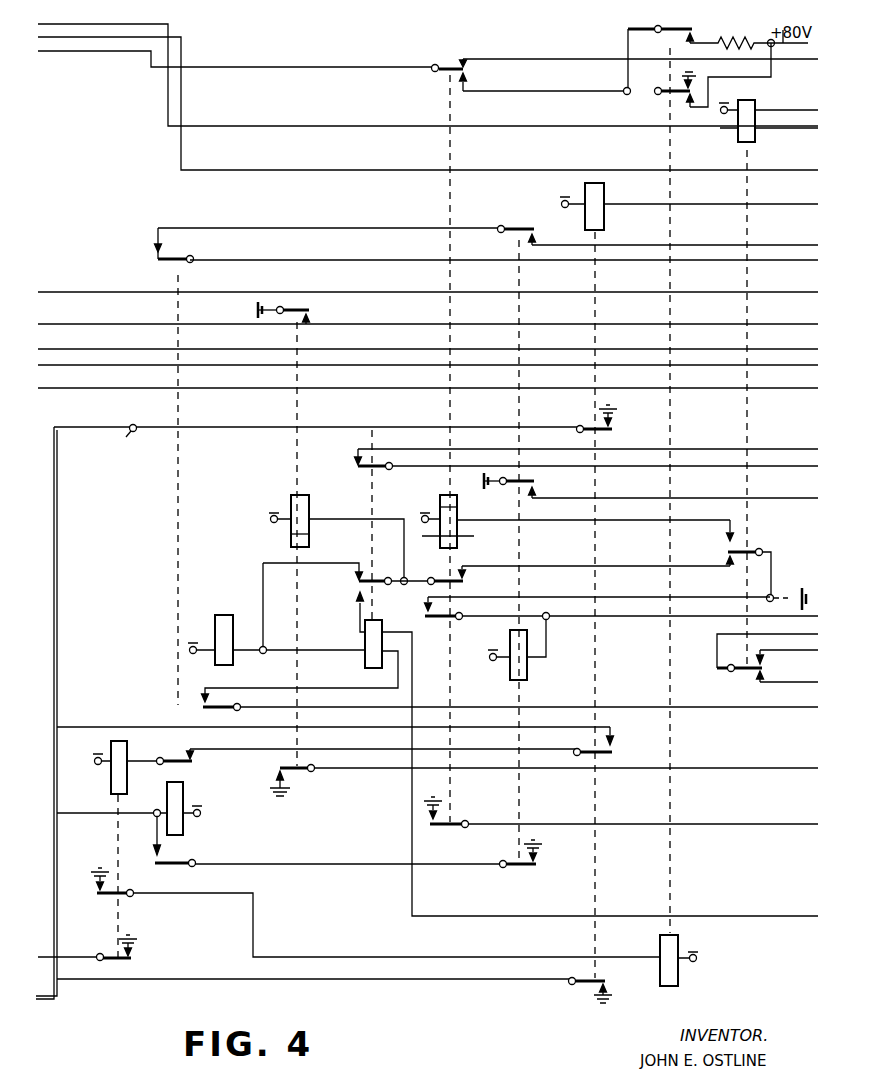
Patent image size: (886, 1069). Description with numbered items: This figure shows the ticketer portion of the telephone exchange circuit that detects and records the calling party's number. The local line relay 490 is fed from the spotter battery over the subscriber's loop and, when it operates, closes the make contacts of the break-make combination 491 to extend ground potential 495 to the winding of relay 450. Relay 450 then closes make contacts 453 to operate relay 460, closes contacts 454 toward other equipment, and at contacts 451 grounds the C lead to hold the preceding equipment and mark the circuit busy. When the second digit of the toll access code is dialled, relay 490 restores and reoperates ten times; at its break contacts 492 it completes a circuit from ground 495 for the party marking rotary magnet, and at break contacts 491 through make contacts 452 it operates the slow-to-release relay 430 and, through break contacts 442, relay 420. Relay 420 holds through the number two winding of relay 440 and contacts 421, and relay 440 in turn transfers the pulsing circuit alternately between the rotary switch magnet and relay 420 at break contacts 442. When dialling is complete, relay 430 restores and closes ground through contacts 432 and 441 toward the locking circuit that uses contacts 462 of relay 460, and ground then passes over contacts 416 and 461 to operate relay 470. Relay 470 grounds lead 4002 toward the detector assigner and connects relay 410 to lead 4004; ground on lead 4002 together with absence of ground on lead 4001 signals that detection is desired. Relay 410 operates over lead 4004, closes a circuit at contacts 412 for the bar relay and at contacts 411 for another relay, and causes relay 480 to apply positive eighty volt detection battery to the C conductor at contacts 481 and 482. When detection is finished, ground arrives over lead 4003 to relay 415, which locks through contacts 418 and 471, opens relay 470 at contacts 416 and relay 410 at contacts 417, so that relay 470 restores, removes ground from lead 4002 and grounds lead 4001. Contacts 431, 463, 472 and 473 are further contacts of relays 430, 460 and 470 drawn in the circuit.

The relay 410 is at (110, 780).
The contacts 411 is at (110, 889).
The contacts 412 is at (134, 954).
The relay 415 is at (185, 790).
The contacts 416 is at (150, 257).
The contacts 417 is at (196, 761).
The contacts 418 is at (168, 857).
The relay 420 is at (232, 612).
The contacts 421 is at (198, 699).
The relay 430 is at (290, 498).
The contacts 431 is at (318, 306).
The contacts 432 is at (288, 777).
The relay 440 is at (362, 657).
The contacts 441 is at (352, 460).
The break contacts 442 is at (353, 580).
The relay 450 is at (438, 498).
The contacts 451 is at (468, 74).
The make contacts 452 is at (466, 580).
The make contacts 453 is at (424, 610).
The contacts 454 is at (440, 816).
The relay 460 is at (508, 670).
The contacts 461 is at (518, 236).
The contacts 462 is at (537, 485).
The contacts 463 is at (538, 857).
The relay 470 is at (604, 191).
The contacts 471 is at (614, 428).
The contacts 472 is at (619, 745).
The contacts 473 is at (588, 988).
The relay 480 is at (680, 940).
The contacts 481 is at (678, 38).
The contacts 482 is at (678, 98).
The line relay 490 is at (755, 100).
The break make contacts 491 is at (724, 550).
The break contacts 492 is at (754, 676).
The ground potential 495 is at (784, 597).
The lead 4001 is at (66, 975).
The lead 4002 is at (62, 426).
The lead 4003 is at (62, 814).
The lead 4004 is at (62, 726).